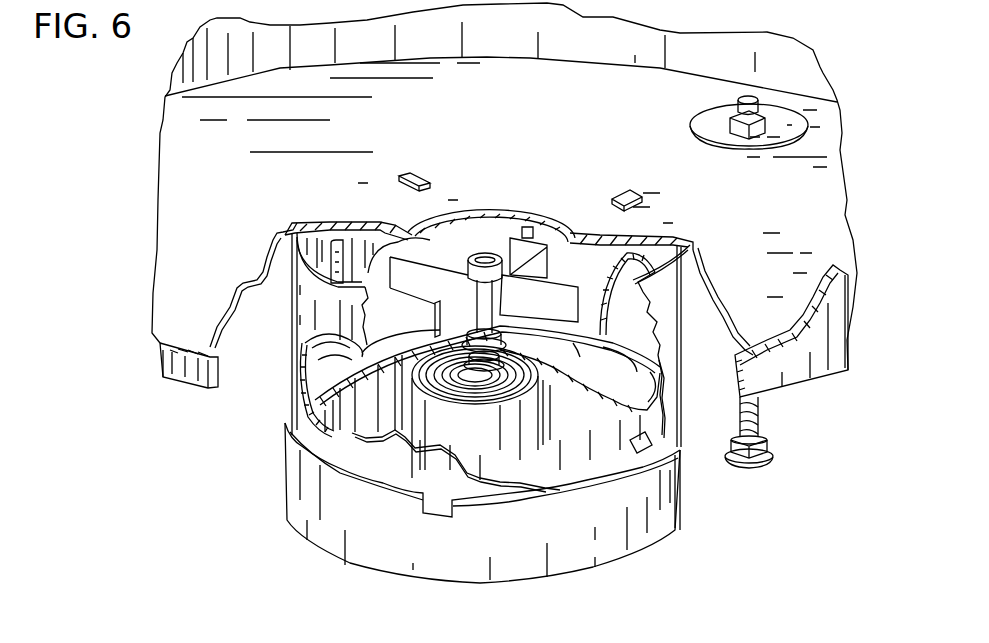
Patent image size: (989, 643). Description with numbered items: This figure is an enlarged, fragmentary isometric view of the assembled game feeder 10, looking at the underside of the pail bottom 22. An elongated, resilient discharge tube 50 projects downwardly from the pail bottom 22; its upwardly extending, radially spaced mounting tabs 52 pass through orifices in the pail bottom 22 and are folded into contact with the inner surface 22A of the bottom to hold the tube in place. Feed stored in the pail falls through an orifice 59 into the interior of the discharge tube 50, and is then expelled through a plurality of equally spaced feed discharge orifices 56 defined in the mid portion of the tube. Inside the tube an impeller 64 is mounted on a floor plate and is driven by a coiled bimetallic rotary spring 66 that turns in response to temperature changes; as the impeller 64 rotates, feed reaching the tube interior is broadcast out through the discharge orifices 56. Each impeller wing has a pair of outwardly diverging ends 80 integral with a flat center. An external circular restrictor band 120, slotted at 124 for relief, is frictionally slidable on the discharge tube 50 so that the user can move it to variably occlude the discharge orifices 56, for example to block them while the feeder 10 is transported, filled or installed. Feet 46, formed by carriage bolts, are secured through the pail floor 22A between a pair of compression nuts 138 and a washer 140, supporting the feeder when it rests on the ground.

The feeder 10 is at (187, 402).
The pail bottom 22 is at (832, 382).
The inner surface of the pail bottom 22A is at (307, 200).
The feet 46 is at (774, 402).
The discharge tube 50 is at (322, 308).
The mounting tabs 52 is at (402, 174).
The feed discharge orifices 56 is at (460, 212).
The orifice 59 is at (522, 210).
The impeller 64 is at (412, 308).
The bimetallic rotary spring 66 is at (549, 440).
The outwardly diverging ends 80 is at (586, 336).
The restrictor band 120 is at (368, 542).
The slot 124 is at (682, 482).
The compression nuts 138 is at (735, 108).
The washer 140 is at (702, 112).